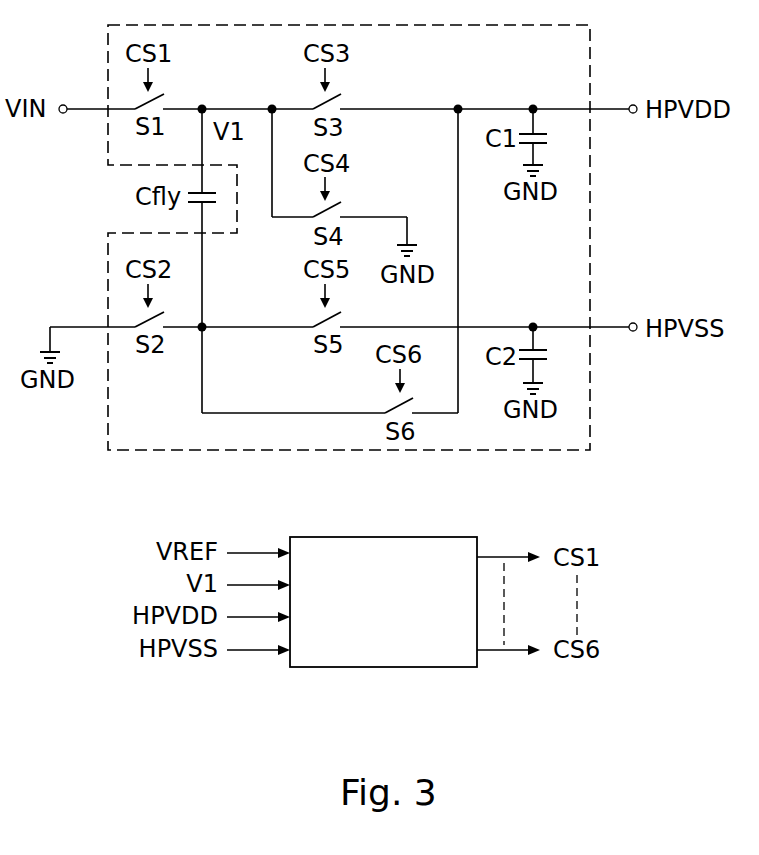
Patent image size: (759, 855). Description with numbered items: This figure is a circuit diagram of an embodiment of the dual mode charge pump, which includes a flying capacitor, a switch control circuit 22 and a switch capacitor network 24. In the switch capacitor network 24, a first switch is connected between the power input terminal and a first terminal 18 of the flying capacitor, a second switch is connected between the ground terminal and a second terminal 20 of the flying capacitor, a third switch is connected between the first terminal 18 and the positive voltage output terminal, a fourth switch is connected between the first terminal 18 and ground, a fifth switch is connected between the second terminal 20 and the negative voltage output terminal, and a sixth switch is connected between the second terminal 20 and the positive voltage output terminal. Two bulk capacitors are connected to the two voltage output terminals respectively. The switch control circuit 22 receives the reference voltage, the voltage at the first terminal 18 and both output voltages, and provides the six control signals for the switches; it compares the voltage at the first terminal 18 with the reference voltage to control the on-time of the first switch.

The first terminal 18 is at (202, 107).
The second terminal 20 is at (203, 325).
The switch control circuit 22 is at (383, 537).
The switch capacitor network 24 is at (592, 223).